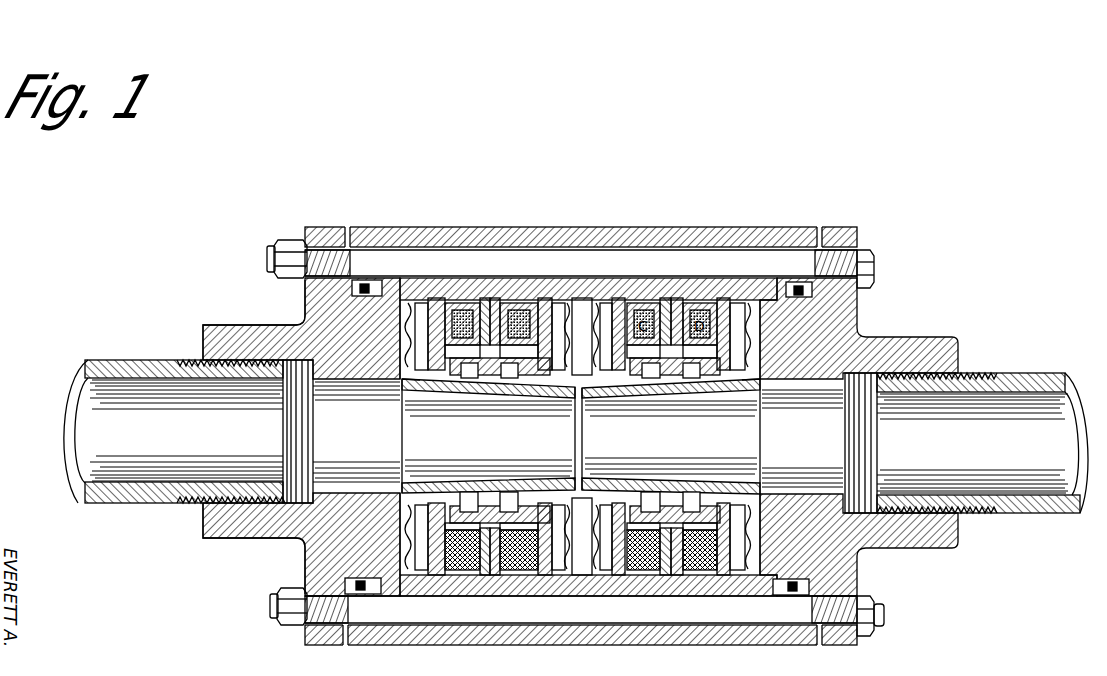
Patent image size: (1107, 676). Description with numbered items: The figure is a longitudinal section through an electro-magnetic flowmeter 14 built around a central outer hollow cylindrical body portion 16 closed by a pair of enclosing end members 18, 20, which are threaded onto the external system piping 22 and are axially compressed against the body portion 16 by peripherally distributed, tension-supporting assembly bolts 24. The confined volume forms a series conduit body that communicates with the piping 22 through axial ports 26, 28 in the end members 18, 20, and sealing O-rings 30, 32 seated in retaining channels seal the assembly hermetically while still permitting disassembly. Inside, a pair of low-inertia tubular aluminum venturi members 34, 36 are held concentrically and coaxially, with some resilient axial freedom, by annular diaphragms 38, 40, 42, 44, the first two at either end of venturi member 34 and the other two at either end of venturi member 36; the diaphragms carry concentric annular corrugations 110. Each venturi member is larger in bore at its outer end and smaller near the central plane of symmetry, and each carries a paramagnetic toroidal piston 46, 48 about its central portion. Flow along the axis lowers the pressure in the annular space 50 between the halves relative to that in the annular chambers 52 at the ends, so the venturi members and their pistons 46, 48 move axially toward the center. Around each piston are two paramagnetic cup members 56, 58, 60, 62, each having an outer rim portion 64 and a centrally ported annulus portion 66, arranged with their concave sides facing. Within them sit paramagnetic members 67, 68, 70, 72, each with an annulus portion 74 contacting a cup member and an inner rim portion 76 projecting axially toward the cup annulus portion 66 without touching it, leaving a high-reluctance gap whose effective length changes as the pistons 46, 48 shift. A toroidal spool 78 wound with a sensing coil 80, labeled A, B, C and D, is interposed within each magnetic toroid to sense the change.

The flowmeter 14 is at (671, 214).
The central outer hollow cylindrical body portion 16 is at (433, 228).
The end member 18 is at (226, 324).
The end member 20 is at (863, 322).
The external system piping 22 is at (100, 360).
The assembly bolts 24 is at (876, 252).
The axial port 26 is at (333, 482).
The axial port 28 is at (778, 492).
The sealing O-ring 30 is at (362, 295).
The sealing O-ring 32 is at (372, 296).
The venturi member 34 is at (470, 488).
The venturi member 36 is at (660, 493).
The annular diaphragm 38 is at (292, 566).
The annular diaphragm 40 is at (582, 336).
The annular diaphragm 42 is at (582, 335).
The annular diaphragm 44 is at (772, 547).
The paramagnetic toroidal piston 46 is at (448, 500).
The paramagnetic toroidal piston 48 is at (638, 500).
The annular space 50 is at (589, 527).
The annular chamber 52 is at (400, 380).
The paramagnetic cup member 56 is at (440, 570).
The paramagnetic cup member 58 is at (525, 560).
The paramagnetic cup member 60 is at (606, 575).
The paramagnetic cup member 62 is at (702, 575).
The outer rim portion 64 is at (500, 300).
The annulus portion 66 is at (560, 572).
The paramagnetic member 67 is at (468, 568).
The paramagnetic member 68 is at (492, 560).
The paramagnetic member 70 is at (648, 572).
The paramagnetic member 72 is at (672, 572).
The annulus portion 74 is at (532, 290).
The inner rim portion 76 is at (508, 376).
The toroidal spool 78 is at (453, 303).
The sensing coil 80 is at (490, 300).
The concentric annular corrugations 110 is at (405, 500).